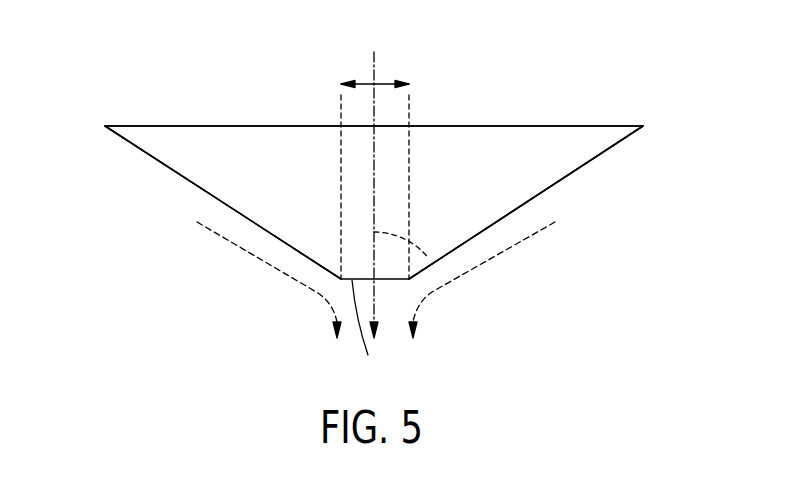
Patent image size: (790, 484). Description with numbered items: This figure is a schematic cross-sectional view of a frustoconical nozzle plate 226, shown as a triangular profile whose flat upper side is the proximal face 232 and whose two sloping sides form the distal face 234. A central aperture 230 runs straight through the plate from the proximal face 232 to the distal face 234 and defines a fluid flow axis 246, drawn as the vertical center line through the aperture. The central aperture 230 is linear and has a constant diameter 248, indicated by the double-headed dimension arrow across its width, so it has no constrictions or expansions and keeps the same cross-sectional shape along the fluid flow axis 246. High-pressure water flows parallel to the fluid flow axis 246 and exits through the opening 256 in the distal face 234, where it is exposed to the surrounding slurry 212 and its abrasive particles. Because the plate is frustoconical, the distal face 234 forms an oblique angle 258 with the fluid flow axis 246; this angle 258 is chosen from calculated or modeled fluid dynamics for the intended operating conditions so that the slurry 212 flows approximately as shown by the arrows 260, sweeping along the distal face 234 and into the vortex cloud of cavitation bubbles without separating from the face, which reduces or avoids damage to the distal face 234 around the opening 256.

The slurry 212 is at (562, 290).
The nozzle plate 226 is at (180, 148).
The central aperture 230 is at (352, 145).
The proximal face 232 is at (578, 112).
The distal face 234 is at (592, 184).
The fluid flow axis 246 is at (374, 63).
The constant diameter 248 is at (383, 90).
The opening 256 is at (367, 337).
The oblique angle 258 is at (427, 256).
The arrows 260 is at (290, 279).